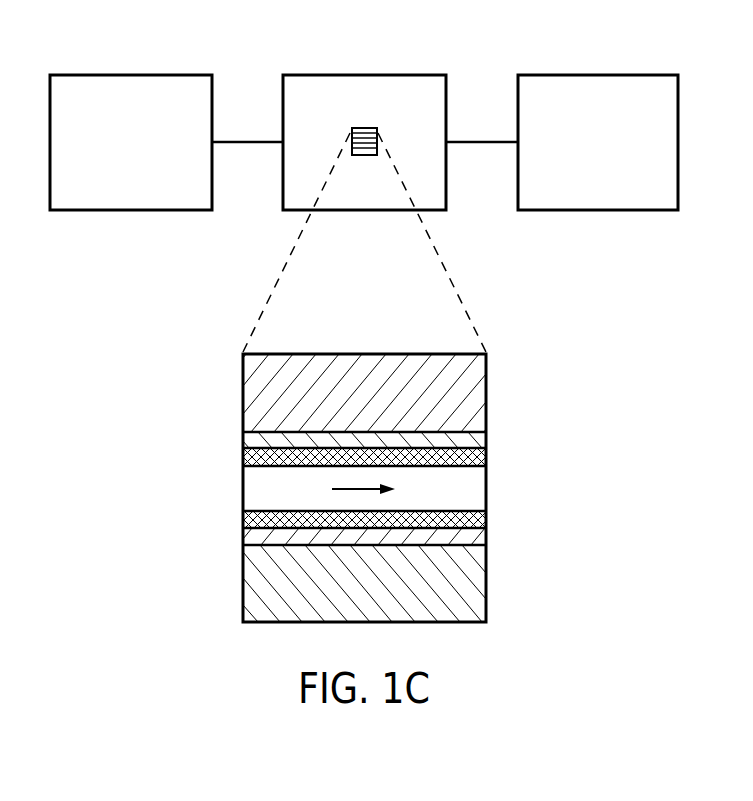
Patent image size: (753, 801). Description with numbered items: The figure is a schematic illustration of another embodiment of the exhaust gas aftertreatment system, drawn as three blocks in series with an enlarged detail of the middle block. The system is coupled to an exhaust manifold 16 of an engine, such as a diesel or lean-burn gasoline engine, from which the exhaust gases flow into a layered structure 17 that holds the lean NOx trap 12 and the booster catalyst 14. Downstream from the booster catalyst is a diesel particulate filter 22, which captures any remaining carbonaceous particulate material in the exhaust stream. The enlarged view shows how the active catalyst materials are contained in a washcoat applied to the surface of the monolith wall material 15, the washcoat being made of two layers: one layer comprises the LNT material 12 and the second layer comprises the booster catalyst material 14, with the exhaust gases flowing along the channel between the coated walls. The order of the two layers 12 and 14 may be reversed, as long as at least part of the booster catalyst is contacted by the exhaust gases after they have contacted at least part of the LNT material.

The exhaust manifold 16 is at (130, 75).
The layered structure 17 is at (364, 75).
The diesel particulate filter 22 is at (600, 75).
The monolith wall material 15 is at (486, 386).
The lean NOx trap 12 is at (486, 440).
The booster catalyst 14 is at (486, 455).